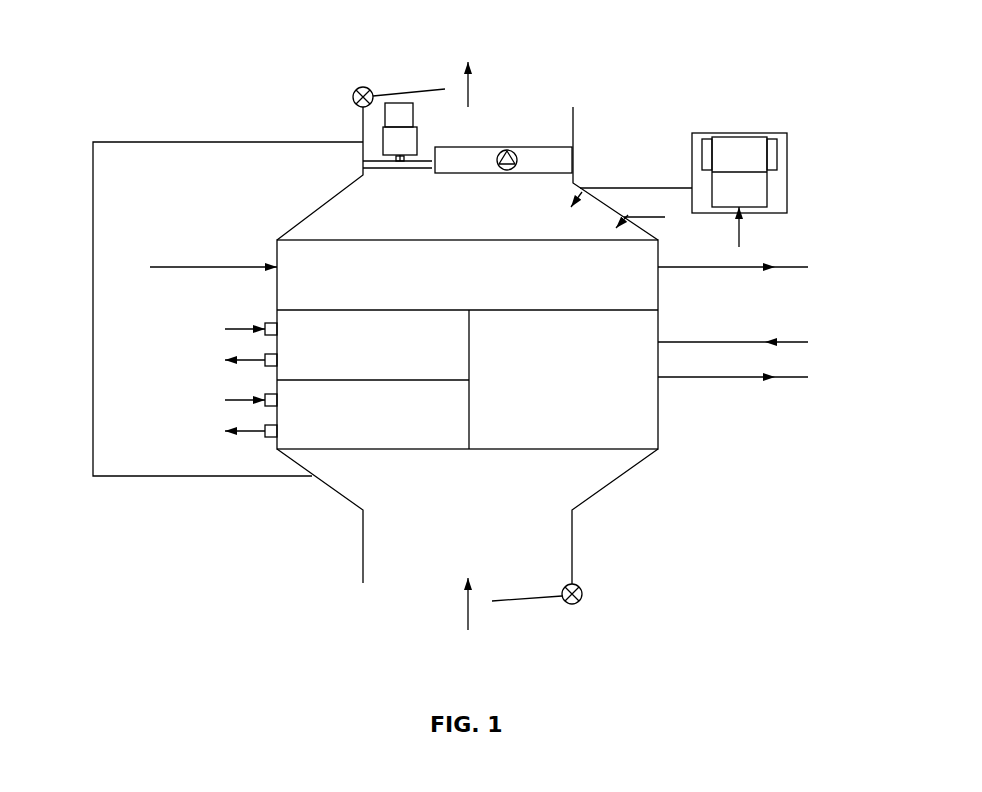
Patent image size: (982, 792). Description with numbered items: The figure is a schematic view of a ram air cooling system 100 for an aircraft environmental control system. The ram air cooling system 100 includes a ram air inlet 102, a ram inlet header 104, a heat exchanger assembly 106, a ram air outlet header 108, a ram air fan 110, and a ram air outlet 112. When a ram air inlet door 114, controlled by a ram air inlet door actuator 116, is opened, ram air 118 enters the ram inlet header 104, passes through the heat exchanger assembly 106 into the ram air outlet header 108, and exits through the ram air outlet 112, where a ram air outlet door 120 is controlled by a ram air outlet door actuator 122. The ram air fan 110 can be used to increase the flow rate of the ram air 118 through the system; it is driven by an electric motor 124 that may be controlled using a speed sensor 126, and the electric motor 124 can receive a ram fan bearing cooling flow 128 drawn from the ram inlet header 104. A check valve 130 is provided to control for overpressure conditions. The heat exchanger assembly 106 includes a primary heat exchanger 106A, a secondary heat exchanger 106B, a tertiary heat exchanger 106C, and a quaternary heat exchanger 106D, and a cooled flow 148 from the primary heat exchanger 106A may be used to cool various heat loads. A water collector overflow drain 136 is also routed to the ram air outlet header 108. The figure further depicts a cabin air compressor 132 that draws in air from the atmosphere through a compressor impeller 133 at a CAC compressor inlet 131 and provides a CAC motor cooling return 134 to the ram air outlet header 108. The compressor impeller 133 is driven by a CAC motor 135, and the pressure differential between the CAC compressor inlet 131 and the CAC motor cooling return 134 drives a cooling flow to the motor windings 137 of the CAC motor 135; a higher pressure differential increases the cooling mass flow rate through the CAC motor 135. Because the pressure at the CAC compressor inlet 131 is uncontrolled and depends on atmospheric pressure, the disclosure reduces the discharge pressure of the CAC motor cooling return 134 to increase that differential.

The ram air cooling system 100 is at (130, 36).
The ram air inlet 102 is at (391, 574).
The ram inlet header 104 is at (574, 545).
The heat exchanger assembly 106 is at (677, 404).
The primary heat exchanger 106A is at (498, 290).
The secondary heat exchanger 106B is at (595, 394).
The tertiary heat exchanger 106C is at (402, 360).
The quaternary heat exchanger 106D is at (402, 427).
The ram air outlet header 108 is at (338, 200).
The ram air fan 110 is at (420, 172).
The ram air outlet 112 is at (495, 100).
The ram air inlet door 114 is at (525, 600).
The ram air inlet door actuator 116 is at (583, 596).
The ram air 118 is at (466, 600).
The ram air outlet door 120 is at (399, 93).
The ram air outlet door actuator 122 is at (363, 86).
The electric motor 124 is at (405, 142).
The speed sensor 126 is at (383, 120).
The ram fan bearing cooling flow 128 is at (223, 477).
The check valve 130 is at (558, 158).
The CAC compressor inlet 131 is at (739, 232).
The cabin air compressor 132 is at (787, 172).
The compressor impeller 133 is at (740, 195).
The CAC motor cooling return 134 is at (630, 188).
The CAC motor 135 is at (750, 160).
The water collector overflow drain 136 is at (660, 220).
The motor windings 137 is at (706, 139).
The cooled flow 148 is at (730, 268).